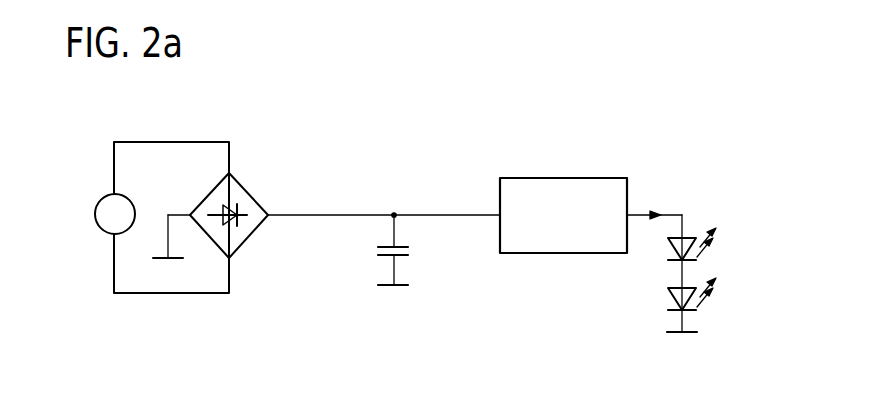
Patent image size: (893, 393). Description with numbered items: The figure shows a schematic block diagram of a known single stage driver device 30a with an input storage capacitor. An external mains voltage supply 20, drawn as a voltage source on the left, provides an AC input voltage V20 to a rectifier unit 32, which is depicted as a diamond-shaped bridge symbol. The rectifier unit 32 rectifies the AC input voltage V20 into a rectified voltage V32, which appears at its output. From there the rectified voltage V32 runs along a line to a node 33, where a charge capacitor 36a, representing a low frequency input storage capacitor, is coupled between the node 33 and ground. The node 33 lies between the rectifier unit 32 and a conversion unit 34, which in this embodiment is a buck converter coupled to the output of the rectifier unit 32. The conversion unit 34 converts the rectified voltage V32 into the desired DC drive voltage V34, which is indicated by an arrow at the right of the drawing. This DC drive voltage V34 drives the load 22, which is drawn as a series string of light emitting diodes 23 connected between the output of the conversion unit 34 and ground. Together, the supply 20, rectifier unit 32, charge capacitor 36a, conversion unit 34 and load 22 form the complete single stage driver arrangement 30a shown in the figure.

The external mains voltage supply 20 is at (105, 233).
The AC input voltage V20 is at (87, 232).
The rectifier unit 32 is at (237, 179).
The rectified voltage V32 is at (270, 220).
The node 33 is at (396, 217).
The charge capacitor 36a is at (378, 256).
The conversion unit 34 is at (572, 178).
The single stage driver device 30a is at (466, 104).
The load 22 is at (655, 291).
The LEDs 23 is at (672, 248).
The DC drive voltage V34 is at (723, 282).